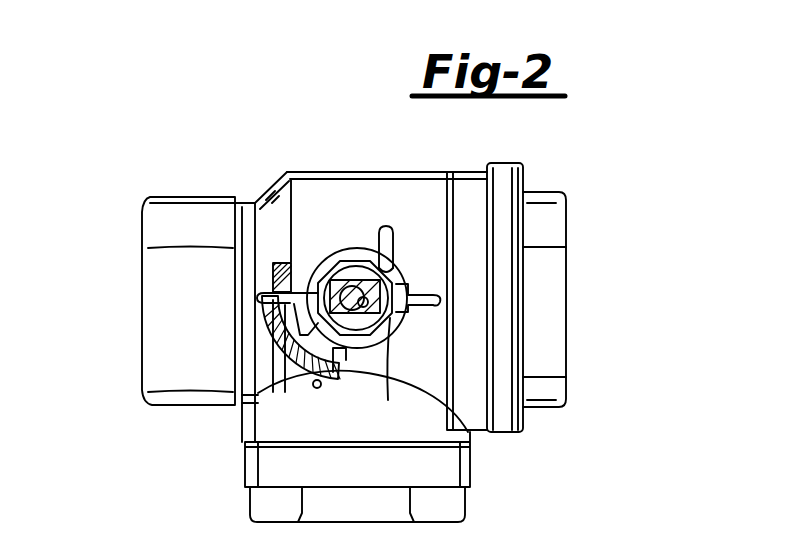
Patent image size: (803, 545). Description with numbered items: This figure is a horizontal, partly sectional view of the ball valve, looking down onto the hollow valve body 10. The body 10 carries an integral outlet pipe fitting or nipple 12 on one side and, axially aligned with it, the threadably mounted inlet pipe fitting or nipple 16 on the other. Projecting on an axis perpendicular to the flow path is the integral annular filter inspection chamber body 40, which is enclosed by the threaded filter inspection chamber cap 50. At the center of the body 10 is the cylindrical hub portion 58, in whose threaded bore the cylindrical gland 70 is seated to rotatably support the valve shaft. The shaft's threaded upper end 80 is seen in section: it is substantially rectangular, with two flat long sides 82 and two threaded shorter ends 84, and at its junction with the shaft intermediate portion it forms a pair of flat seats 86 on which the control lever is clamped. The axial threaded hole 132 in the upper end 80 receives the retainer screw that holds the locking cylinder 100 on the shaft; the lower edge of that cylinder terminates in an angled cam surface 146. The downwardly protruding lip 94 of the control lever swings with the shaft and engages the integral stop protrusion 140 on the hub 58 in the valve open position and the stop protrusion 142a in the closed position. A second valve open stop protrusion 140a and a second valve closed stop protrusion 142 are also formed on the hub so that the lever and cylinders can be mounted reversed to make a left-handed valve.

The valve body 10 is at (370, 172).
The outlet pipe fitting or nipple 12 is at (185, 388).
The inlet pipe fitting or nipple 16 is at (500, 388).
The filter inspection chamber body 40 is at (247, 441).
The filter inspection chamber cap 50 is at (277, 505).
The hub portion 58 is at (383, 333).
The gland 70 is at (393, 265).
The threaded upper end of the shaft 80 is at (362, 300).
The flat long sides 82 is at (399, 377).
The threaded shorter ends 84 is at (332, 296).
The flat seats 86 is at (363, 373).
The lip 94 is at (272, 276).
The locking cylinder 100 is at (258, 323).
The axial threaded hole 132 is at (400, 313).
The stop protrusion 140 is at (260, 297).
The second valve open stop protrusion 140a is at (440, 294).
The second valve closed stop protrusion 142 is at (318, 388).
The stop protrusion 142a is at (386, 268).
The cam surface 146 is at (248, 402).